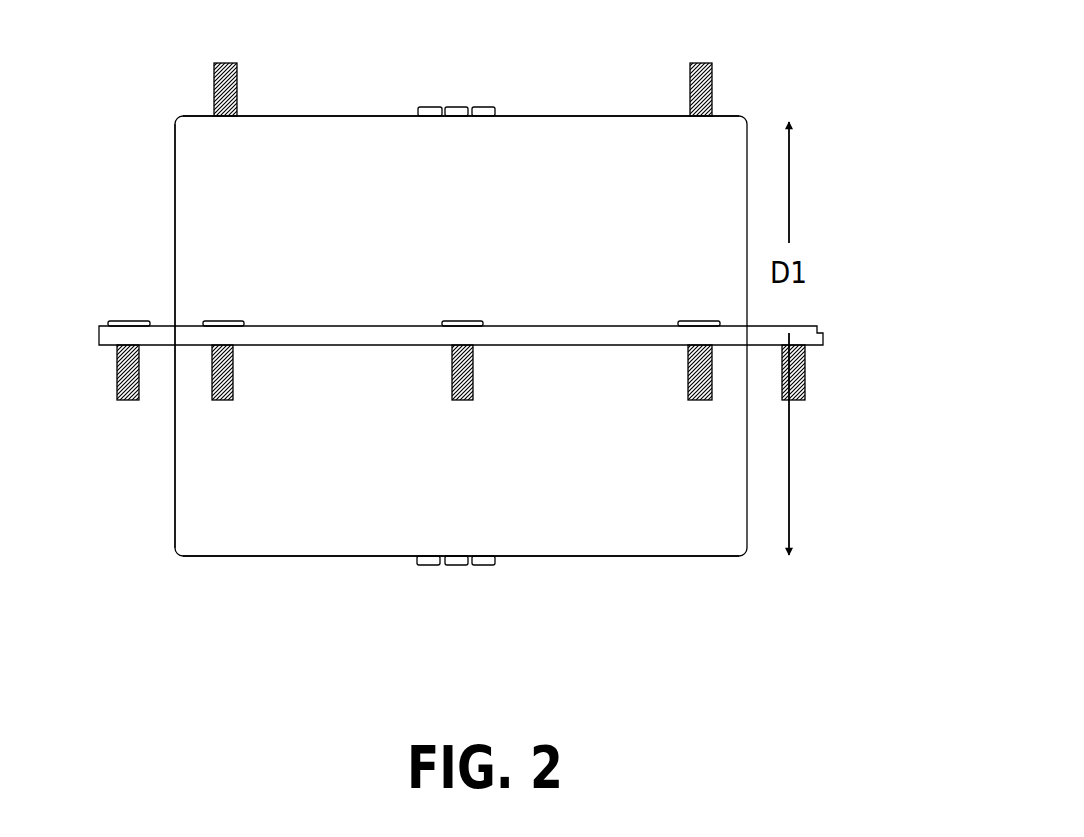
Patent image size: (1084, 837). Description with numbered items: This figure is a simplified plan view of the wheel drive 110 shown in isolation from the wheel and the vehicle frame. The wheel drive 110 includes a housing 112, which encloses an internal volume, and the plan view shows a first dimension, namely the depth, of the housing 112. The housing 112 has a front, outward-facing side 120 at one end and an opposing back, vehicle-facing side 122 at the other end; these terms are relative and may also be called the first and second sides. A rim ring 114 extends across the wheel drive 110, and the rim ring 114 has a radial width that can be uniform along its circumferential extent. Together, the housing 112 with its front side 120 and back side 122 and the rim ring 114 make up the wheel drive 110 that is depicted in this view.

The wheel drive 110 is at (492, 263).
The housing 112 is at (187, 469).
The rim ring 114 is at (827, 329).
The front side 120 is at (571, 113).
The back side 122 is at (582, 560).